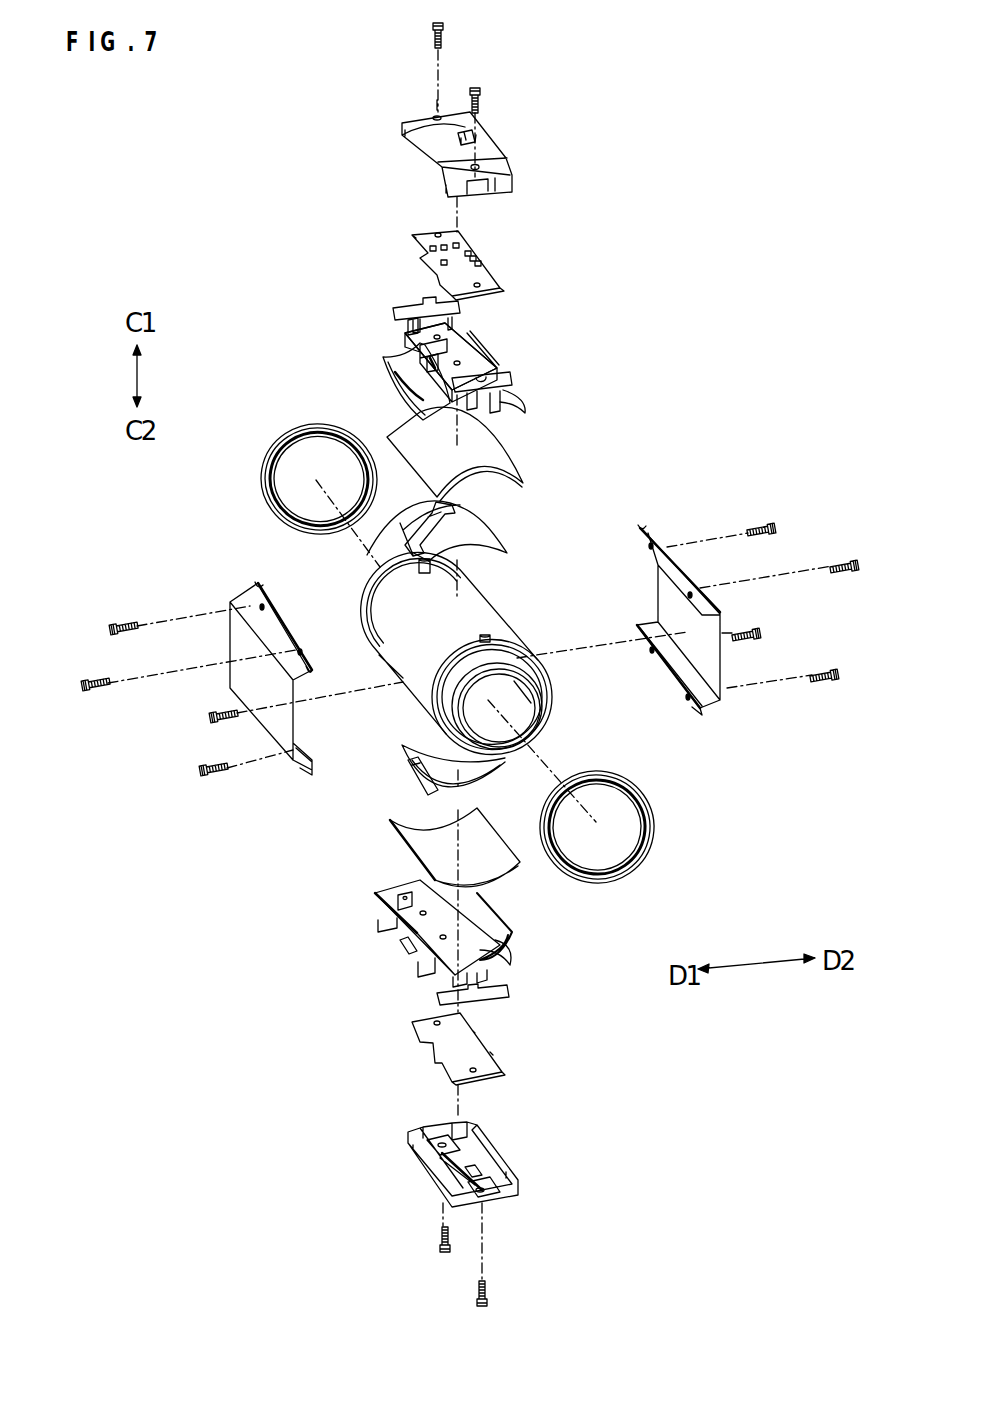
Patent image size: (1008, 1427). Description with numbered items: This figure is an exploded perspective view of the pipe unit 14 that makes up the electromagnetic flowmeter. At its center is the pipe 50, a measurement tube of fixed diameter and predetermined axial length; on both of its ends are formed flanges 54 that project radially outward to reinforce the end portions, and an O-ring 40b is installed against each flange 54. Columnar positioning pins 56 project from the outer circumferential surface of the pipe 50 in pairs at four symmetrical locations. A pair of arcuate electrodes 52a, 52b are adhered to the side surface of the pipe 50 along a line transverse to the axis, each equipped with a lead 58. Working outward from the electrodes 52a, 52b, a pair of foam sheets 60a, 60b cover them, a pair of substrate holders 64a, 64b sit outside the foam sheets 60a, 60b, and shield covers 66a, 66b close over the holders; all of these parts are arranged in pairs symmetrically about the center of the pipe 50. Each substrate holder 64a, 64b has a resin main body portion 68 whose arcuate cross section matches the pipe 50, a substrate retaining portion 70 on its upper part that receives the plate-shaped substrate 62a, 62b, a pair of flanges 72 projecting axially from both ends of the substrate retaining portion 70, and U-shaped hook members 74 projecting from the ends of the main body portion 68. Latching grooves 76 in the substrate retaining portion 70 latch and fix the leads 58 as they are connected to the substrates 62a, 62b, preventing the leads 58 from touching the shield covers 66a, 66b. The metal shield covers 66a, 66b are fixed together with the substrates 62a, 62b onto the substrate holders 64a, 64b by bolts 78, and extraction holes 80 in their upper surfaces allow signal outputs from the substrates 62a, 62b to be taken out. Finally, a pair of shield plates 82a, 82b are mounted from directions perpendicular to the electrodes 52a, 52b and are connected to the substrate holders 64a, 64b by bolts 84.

The pipe unit 14 is at (614, 345).
The O-ring 40b is at (302, 436).
The pipe 50 is at (560, 697).
The electrode 52a is at (492, 514).
The electrode 52b is at (432, 750).
The flange 54 is at (372, 622).
The positioning pin 56 is at (487, 642).
The lead 58 is at (410, 540).
The foam sheet 60a is at (522, 458).
The foam sheet 60b is at (410, 850).
The substrate 62a is at (493, 277).
The substrate 62b is at (492, 1060).
The substrate holder 64a is at (498, 346).
The substrate holder 64b is at (411, 972).
The shield cover 66a is at (495, 133).
The shield cover 66b is at (432, 1171).
The main body portion 68 is at (418, 410).
The substrate retaining portion 70 is at (474, 350).
The flange 72 is at (412, 305).
The hook member 74 is at (408, 330).
The latching groove 76 is at (425, 364).
The bolt 78 is at (446, 26).
The extraction hole 80 is at (410, 141).
The shield plate 82a is at (240, 647).
The shield plate 82b is at (668, 597).
The bolt 84 is at (127, 620).